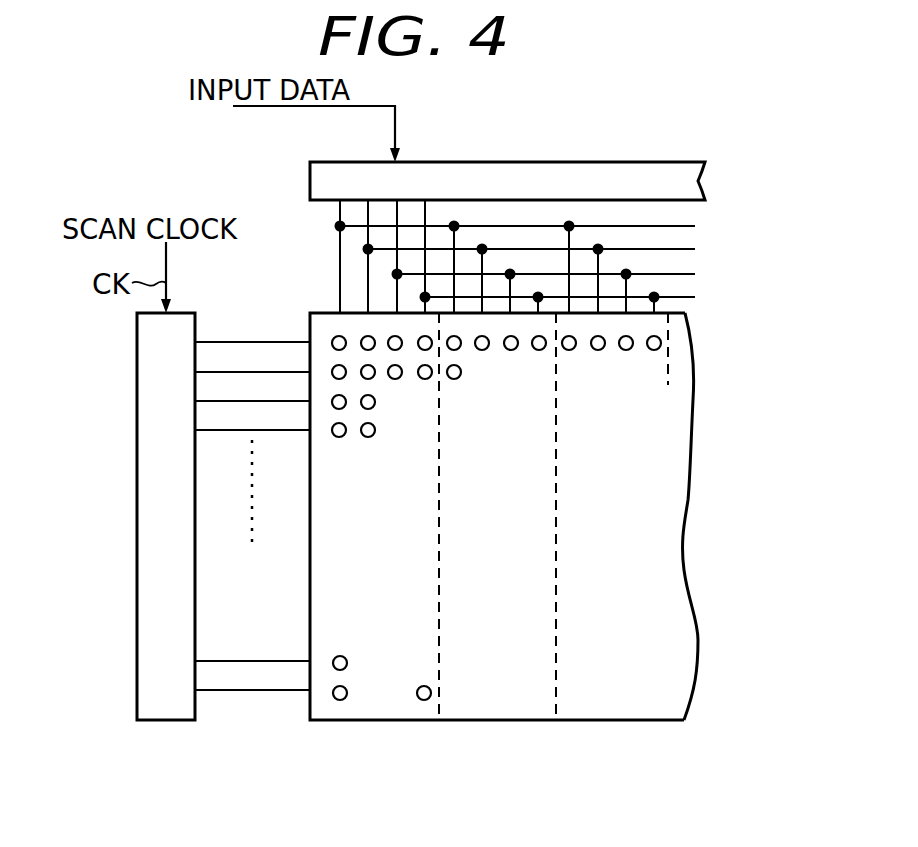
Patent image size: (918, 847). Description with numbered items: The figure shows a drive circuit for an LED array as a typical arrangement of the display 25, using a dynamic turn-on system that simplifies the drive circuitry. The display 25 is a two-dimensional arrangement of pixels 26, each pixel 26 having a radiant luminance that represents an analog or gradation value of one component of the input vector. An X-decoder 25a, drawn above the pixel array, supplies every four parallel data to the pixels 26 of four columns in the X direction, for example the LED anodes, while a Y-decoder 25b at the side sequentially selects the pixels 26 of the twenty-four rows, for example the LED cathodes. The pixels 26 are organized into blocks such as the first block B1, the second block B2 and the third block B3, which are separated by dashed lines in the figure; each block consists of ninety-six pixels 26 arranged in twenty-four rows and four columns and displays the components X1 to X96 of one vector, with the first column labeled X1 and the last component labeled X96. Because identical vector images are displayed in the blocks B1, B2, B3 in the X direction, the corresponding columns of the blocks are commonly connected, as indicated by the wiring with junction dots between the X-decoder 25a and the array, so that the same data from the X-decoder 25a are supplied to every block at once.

The display 25 is at (310, 707).
The X-decoder 25a is at (600, 162).
The Y-decoder 25b is at (137, 545).
The pixel 26 is at (482, 351).
The first vector component X1 is at (333, 338).
The ninety-sixth vector component X96 is at (424, 701).
The first block B1 is at (350, 582).
The second block B2 is at (497, 681).
The third block B3 is at (599, 674).